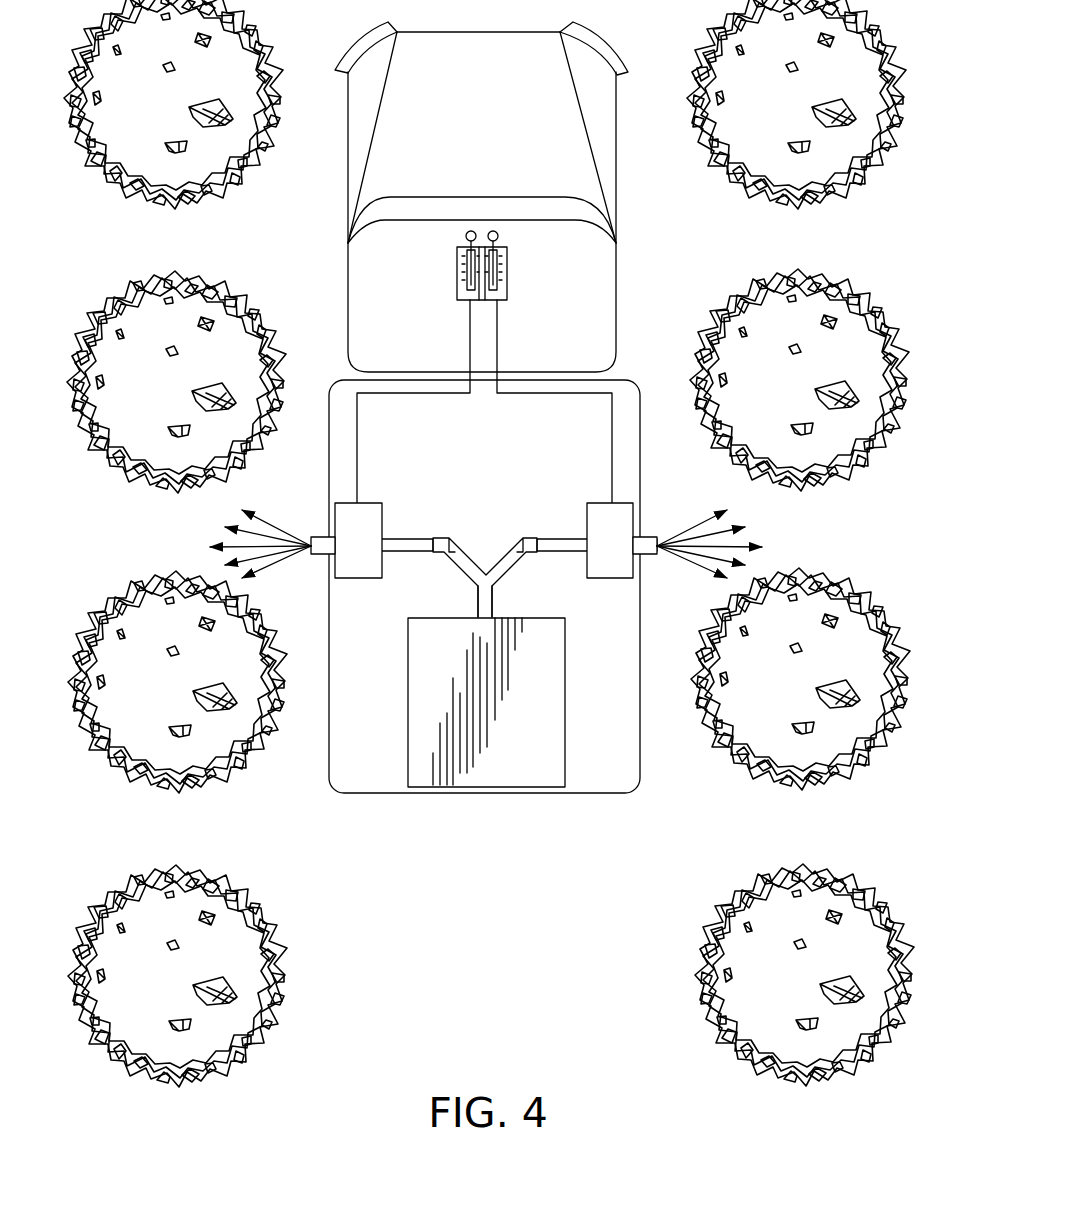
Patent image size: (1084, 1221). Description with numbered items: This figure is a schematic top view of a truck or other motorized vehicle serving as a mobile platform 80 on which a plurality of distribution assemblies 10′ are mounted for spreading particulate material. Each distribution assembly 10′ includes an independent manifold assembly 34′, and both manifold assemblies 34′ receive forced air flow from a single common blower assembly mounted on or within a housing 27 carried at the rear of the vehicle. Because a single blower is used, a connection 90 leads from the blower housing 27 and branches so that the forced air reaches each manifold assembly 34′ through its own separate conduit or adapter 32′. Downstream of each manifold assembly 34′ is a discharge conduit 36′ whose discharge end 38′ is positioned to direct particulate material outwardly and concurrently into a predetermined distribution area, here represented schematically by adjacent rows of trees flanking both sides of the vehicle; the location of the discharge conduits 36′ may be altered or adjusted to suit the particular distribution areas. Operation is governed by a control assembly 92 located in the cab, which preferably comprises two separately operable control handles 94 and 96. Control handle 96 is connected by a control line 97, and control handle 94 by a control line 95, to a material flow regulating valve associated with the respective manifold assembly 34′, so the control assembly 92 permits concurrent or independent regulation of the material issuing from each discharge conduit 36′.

The mobile platform 80 is at (385, 815).
The control assembly 92 is at (453, 273).
The control handle 96 is at (465, 236).
The control handle 94 is at (499, 236).
The control line 97 is at (385, 393).
The control line 95 is at (503, 393).
The conduit or adapter 32′ is at (410, 552).
The distribution assembly 10′ is at (428, 530).
The connection 90 is at (492, 597).
The manifold assembly 34′ is at (350, 503).
The discharge conduit 36′ is at (318, 556).
The discharge end 38′ is at (270, 523).
The blower assembly housing 27 is at (408, 727).